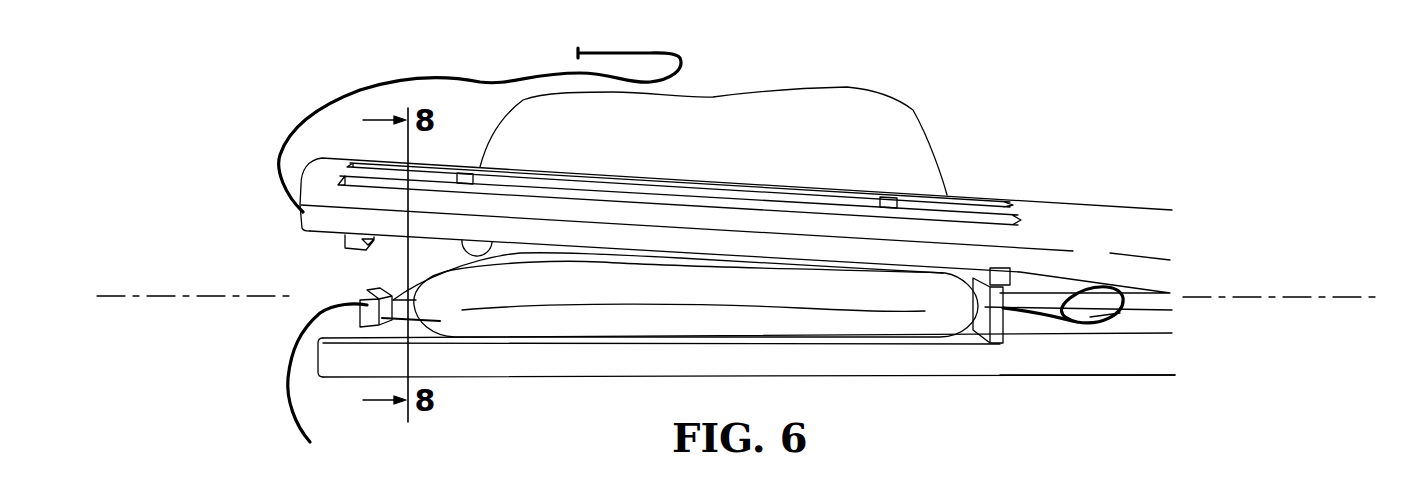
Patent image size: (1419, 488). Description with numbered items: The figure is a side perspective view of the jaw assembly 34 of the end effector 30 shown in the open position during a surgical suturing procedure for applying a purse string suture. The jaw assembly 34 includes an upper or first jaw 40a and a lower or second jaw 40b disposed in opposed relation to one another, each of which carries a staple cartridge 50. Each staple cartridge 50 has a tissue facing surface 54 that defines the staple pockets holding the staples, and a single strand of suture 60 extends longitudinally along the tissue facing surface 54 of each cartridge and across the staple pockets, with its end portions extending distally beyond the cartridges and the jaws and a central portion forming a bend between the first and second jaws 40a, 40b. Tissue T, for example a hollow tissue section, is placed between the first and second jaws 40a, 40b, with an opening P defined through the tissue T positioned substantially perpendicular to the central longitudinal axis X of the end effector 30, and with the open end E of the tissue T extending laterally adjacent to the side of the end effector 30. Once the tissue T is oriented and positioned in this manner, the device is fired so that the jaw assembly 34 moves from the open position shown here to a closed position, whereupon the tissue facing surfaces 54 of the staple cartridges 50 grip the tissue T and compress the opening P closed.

The end effector 30 is at (1178, 191).
The jaw assembly 34 is at (1093, 379).
The first jaw 40a is at (1043, 206).
The second jaw 40b is at (997, 362).
The staple cartridge 50 is at (345, 246).
The tissue facing surface 54 is at (505, 246).
The suture 60 is at (683, 58).
The tissue T is at (896, 123).
The open end E is at (620, 328).
The opening P is at (530, 307).
The central longitudinal axis X is at (736, 297).